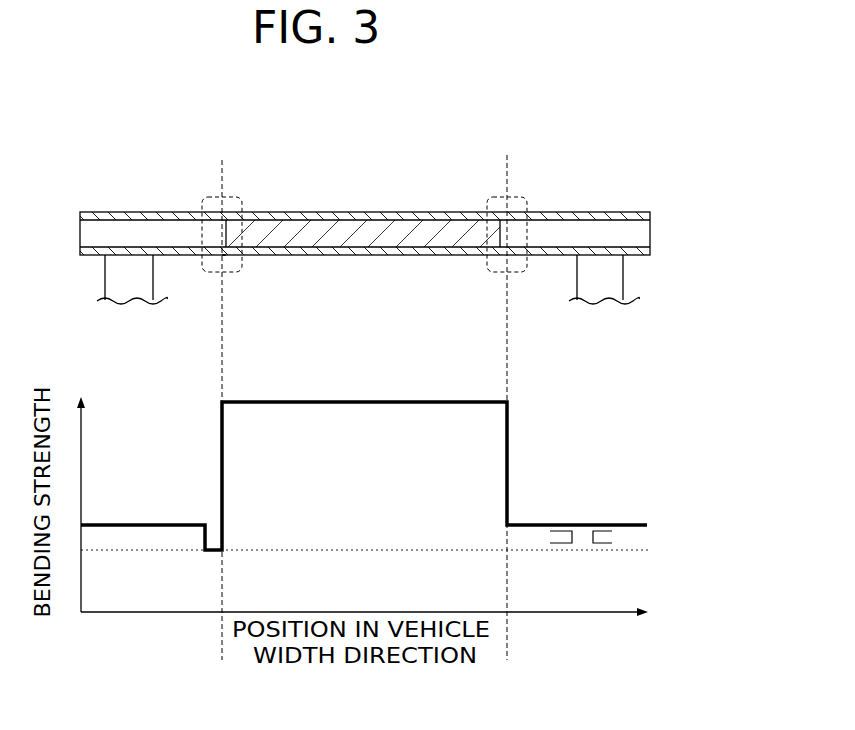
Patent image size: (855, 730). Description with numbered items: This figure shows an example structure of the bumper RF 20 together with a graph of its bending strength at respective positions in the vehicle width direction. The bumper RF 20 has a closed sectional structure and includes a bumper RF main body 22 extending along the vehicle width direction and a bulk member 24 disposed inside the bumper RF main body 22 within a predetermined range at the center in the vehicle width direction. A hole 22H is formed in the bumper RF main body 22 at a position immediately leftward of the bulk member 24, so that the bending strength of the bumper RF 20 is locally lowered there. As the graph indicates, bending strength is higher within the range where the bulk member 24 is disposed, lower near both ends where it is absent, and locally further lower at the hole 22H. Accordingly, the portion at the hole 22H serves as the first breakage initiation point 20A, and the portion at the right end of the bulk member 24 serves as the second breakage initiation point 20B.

The bumper RF 20 is at (363, 228).
The first breakage initiation point 20A is at (208, 198).
The second breakage initiation point 20B is at (488, 198).
The bumper RF main body 22 is at (570, 212).
The hole 22H is at (210, 270).
The bulk member 24 is at (362, 215).